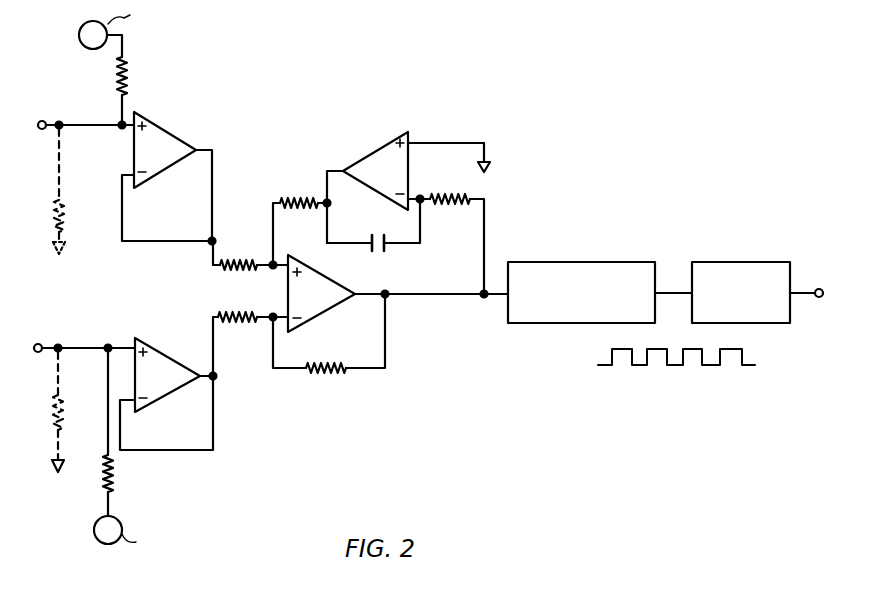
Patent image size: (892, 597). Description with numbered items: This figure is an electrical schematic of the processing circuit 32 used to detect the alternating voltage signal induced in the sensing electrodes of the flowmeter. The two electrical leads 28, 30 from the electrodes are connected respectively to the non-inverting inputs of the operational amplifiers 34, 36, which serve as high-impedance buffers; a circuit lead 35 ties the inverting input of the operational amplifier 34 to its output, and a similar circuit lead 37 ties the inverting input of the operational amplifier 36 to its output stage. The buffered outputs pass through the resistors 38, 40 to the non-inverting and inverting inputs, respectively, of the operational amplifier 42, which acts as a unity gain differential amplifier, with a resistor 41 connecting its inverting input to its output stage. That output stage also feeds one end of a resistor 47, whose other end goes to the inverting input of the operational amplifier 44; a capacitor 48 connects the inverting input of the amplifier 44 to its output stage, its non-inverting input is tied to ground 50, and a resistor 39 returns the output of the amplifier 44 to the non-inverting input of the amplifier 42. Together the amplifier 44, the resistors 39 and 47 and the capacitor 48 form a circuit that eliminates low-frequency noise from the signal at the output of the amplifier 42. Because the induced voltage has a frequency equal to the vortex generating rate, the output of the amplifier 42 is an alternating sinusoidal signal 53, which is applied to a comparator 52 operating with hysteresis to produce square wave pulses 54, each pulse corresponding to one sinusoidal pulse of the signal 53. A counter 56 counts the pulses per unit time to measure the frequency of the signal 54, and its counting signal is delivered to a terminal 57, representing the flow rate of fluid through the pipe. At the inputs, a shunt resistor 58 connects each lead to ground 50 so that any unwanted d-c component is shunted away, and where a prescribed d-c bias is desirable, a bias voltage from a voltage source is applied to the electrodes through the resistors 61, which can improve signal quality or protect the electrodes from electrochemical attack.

The electrical lead 28 is at (107, 125).
The electrical lead 30 is at (86, 348).
The circuit 32 is at (340, 96).
The operational amplifier 34 is at (156, 118).
The circuit lead 35 is at (148, 241).
The operational amplifier 36 is at (174, 360).
The circuit lead 37 is at (174, 450).
The resistor 38 is at (248, 260).
The resistor 39 is at (296, 194).
The resistor 40 is at (238, 310).
The resistor 41 is at (328, 374).
The operational amplifier 42 is at (318, 318).
The operational amplifier 44 is at (362, 156).
The resistor 47 is at (458, 192).
The capacitor 48 is at (380, 248).
The ground 50 is at (66, 260).
The comparator 52 is at (604, 262).
The signal 53 is at (484, 331).
The square wave pulses 54 is at (676, 308).
The counter 56 is at (760, 262).
The terminal 57 is at (816, 302).
The resistor 58 is at (62, 200).
The resistor 61 is at (124, 62).